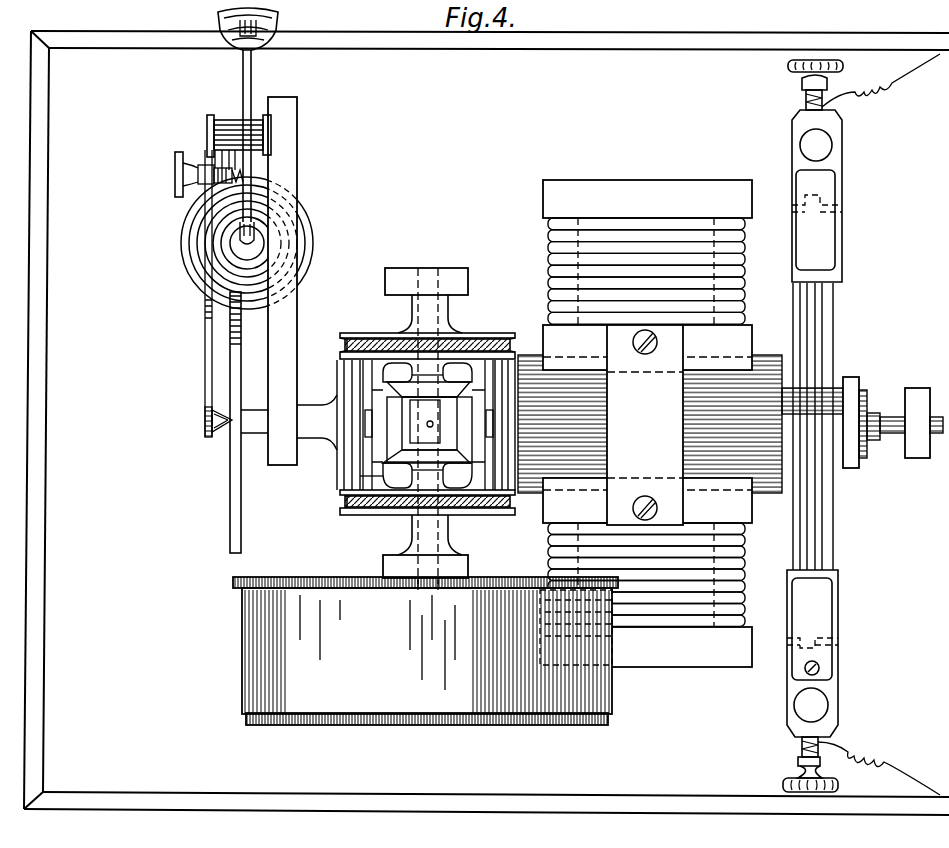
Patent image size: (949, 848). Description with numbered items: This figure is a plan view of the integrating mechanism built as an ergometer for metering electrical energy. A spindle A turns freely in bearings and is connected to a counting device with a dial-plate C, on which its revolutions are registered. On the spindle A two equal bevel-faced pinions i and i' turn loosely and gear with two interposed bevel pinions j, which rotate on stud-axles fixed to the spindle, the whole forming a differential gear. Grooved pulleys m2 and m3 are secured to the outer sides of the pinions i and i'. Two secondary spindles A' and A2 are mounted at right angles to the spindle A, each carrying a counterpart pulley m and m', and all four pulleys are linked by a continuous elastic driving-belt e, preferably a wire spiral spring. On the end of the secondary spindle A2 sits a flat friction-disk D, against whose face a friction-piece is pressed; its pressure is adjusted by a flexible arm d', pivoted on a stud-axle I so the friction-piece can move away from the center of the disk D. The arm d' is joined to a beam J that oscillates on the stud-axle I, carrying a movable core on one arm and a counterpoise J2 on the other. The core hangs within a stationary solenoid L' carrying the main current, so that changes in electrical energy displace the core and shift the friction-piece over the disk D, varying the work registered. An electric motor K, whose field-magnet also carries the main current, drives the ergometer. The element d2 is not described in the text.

The counterpoise J2 is at (232, 48).
The beam J is at (252, 76).
The stud-axle I is at (207, 133).
The stationary solenoid L' is at (255, 243).
The friction-disk D is at (230, 522).
The flexible arm d' is at (207, 436).
The pawl rack d2 is at (212, 318).
The secondary spindle A2 is at (255, 425).
The spindle A is at (426, 417).
The grooved pulley m3 is at (427, 334).
The grooved pulley m2 is at (427, 515).
The driving-belt e is at (345, 344).
The bevel-faced pinion i' is at (426, 371).
The pulley m is at (443, 416).
The bevel-faced pinion i is at (427, 475).
The interposed bevel-faced pinion j is at (383, 466).
The pulley m' is at (371, 481).
The electric motor K is at (647, 412).
The secondary spindle A' is at (862, 417).
The dial-plate C is at (425, 651).